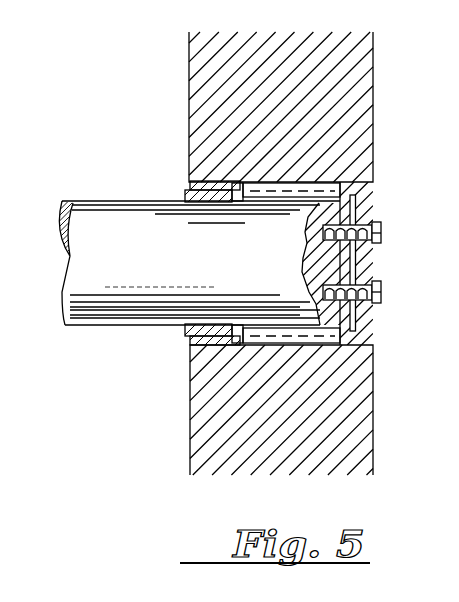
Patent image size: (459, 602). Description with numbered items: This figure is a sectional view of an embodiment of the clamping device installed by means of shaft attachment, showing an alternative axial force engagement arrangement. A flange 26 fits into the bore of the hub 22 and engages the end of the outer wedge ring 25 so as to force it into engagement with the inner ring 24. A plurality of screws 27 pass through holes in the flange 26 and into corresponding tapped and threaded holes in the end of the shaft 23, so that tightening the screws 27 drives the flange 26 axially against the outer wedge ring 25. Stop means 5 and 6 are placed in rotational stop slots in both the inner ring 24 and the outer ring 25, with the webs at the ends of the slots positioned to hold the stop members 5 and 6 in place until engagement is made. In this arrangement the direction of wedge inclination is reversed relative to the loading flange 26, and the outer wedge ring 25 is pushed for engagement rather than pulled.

The hub 22 is at (198, 104).
The shaft 23 is at (150, 221).
The inner ring 24 is at (188, 330).
The outer wedge ring 25 is at (195, 347).
The flange 26 is at (363, 213).
The screws 27 is at (381, 232).
The stop means 5 is at (325, 188).
The stop means 6 is at (330, 340).